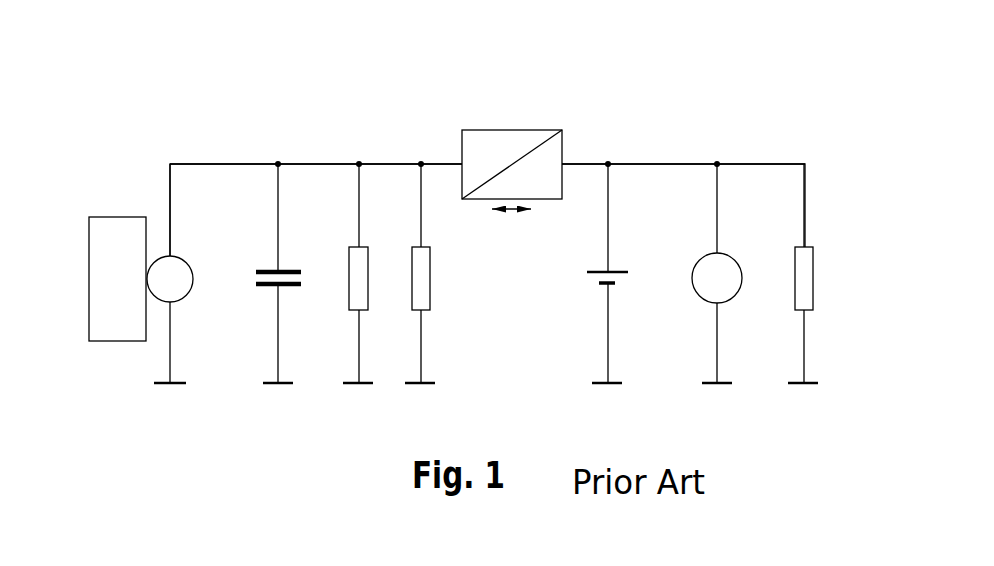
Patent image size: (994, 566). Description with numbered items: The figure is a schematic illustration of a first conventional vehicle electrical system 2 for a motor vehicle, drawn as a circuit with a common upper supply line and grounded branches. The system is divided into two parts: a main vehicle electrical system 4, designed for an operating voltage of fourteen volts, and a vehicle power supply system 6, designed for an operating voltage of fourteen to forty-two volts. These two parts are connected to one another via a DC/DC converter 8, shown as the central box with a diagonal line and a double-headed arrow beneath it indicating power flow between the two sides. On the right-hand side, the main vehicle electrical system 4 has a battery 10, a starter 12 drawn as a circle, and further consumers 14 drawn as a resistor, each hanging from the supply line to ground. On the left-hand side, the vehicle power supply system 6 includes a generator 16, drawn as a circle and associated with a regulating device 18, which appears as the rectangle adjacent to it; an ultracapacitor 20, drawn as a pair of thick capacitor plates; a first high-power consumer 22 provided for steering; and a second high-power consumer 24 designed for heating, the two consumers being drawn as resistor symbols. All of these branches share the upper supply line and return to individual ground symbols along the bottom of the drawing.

The conventional vehicle electrical system 2 is at (308, 93).
The main vehicle electrical system 4 is at (727, 127).
The vehicle power supply system 6 is at (225, 128).
The DC/DC converter 8 is at (513, 122).
The battery 10 is at (575, 332).
The starter 12 is at (695, 345).
The further consumers 14 is at (780, 343).
The generator 16 is at (200, 342).
The regulating device 18 is at (106, 348).
The ultracapacitor 20 is at (265, 252).
The first high-power consumer 22 is at (332, 340).
The second high-power consumer 24 is at (445, 328).